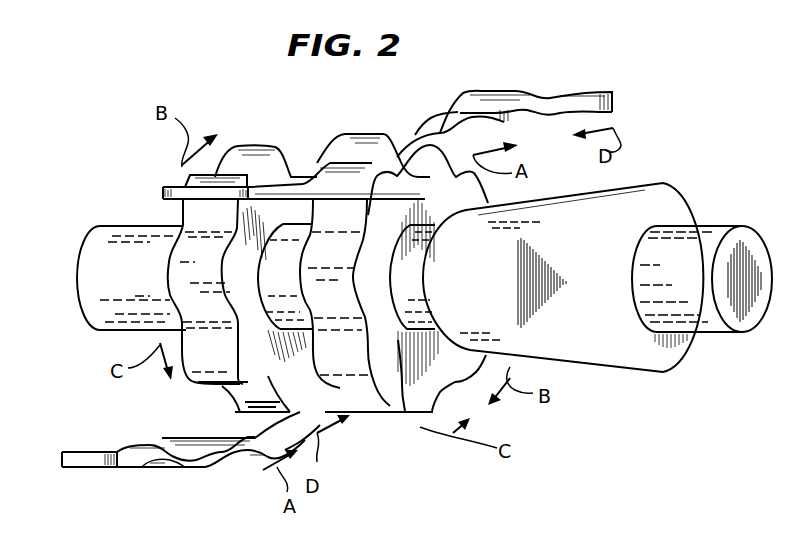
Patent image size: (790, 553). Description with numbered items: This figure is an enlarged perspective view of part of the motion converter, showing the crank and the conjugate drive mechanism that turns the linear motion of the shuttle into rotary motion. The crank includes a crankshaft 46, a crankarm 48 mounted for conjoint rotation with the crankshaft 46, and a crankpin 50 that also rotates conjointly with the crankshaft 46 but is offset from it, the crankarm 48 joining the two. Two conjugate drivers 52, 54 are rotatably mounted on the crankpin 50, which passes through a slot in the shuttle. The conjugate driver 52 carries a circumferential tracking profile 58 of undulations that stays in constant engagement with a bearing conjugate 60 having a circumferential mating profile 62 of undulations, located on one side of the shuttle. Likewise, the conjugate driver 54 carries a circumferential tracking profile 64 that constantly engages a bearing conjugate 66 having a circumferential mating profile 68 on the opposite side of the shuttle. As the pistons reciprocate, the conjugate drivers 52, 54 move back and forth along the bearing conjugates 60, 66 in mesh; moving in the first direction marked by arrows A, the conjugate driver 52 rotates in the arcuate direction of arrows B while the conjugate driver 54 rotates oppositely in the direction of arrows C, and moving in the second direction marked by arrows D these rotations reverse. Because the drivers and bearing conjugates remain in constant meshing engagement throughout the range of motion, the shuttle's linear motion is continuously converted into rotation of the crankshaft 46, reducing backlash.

The crankshaft 46 is at (712, 233).
The crankarm 48 is at (630, 205).
The crankpin 50 is at (126, 230).
The conjugate driver 52 is at (252, 156).
The conjugate driver 54 is at (343, 385).
The circumferential tracking profile 58 is at (277, 142).
The bearing conjugate 60 is at (57, 464).
The circumferential mating profile 62 is at (340, 390).
The circumferential tracking profile 64 is at (402, 413).
The bearing conjugate 66 is at (530, 92).
The circumferential mating profile 68 is at (380, 133).